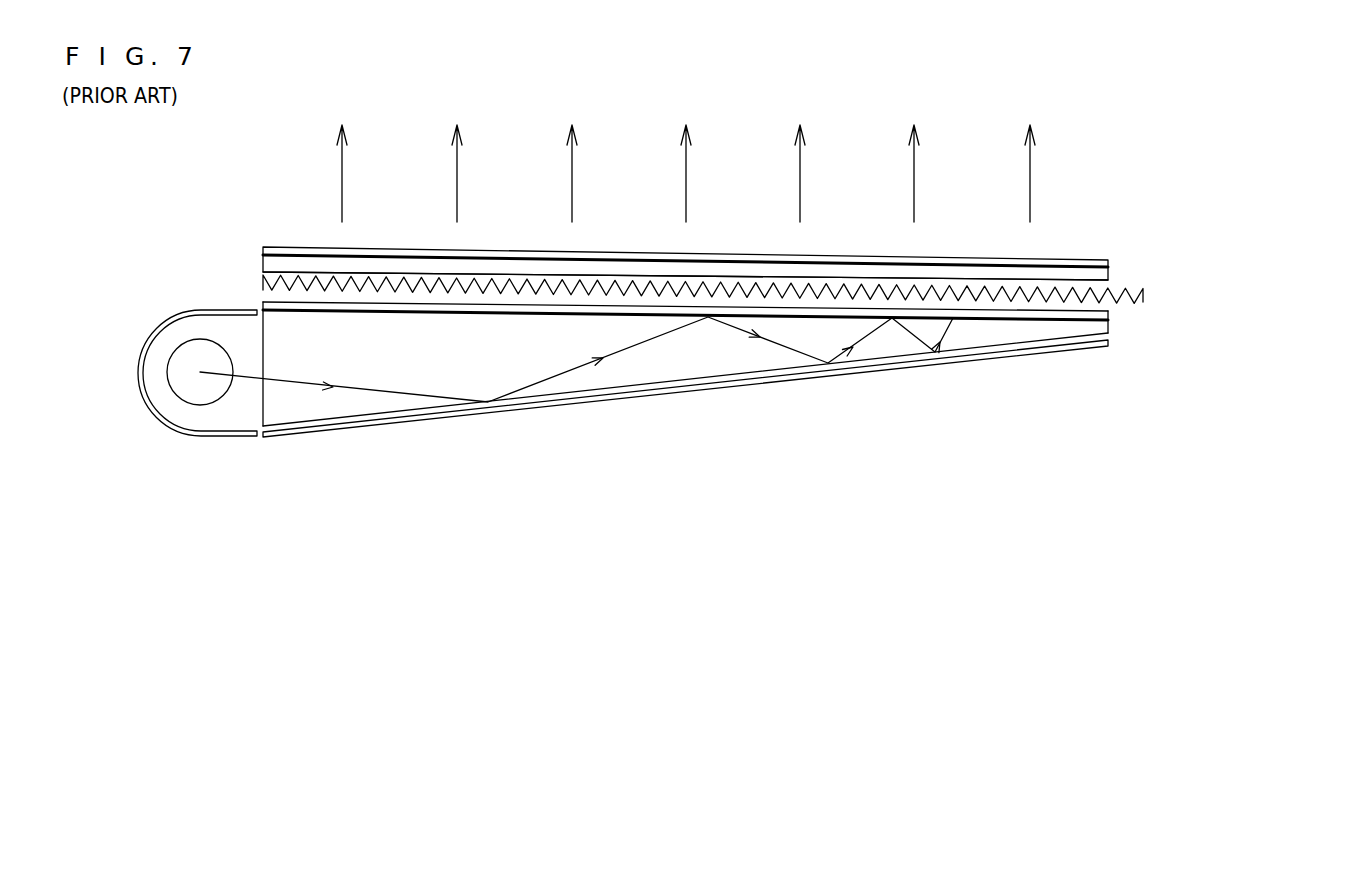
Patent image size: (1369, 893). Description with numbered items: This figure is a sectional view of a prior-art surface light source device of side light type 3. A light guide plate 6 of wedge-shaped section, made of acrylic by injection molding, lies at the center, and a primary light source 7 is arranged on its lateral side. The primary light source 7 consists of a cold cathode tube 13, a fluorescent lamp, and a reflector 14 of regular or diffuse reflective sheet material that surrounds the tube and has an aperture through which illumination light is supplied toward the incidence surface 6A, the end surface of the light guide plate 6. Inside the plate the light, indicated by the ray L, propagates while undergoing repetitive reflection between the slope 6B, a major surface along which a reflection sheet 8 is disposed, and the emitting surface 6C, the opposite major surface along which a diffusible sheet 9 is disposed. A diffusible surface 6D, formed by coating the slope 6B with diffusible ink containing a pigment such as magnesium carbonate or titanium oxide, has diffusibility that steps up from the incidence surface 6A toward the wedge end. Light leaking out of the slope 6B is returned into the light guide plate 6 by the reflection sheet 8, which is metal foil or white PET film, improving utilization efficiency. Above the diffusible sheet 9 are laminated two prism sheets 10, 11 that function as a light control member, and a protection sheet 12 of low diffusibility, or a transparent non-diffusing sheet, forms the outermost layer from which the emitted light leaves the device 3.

The surface light source device of side light type 3 is at (1000, 604).
The light guide plate 6 is at (685, 346).
The incidence surface 6A is at (262, 370).
The slope 6B is at (492, 403).
The emitting surface 6C is at (492, 310).
The diffusible surface 6D is at (803, 370).
The primary light source 7 is at (172, 367).
The reflection sheet 8 is at (745, 380).
The diffusible sheet 9 is at (1110, 318).
The prism sheet 10 is at (1105, 302).
The prism sheet 11 is at (1100, 280).
The protection sheet 12 is at (1108, 262).
The cold cathode tube 13 is at (208, 397).
The reflector 14 is at (152, 413).
The light ray L is at (387, 397).